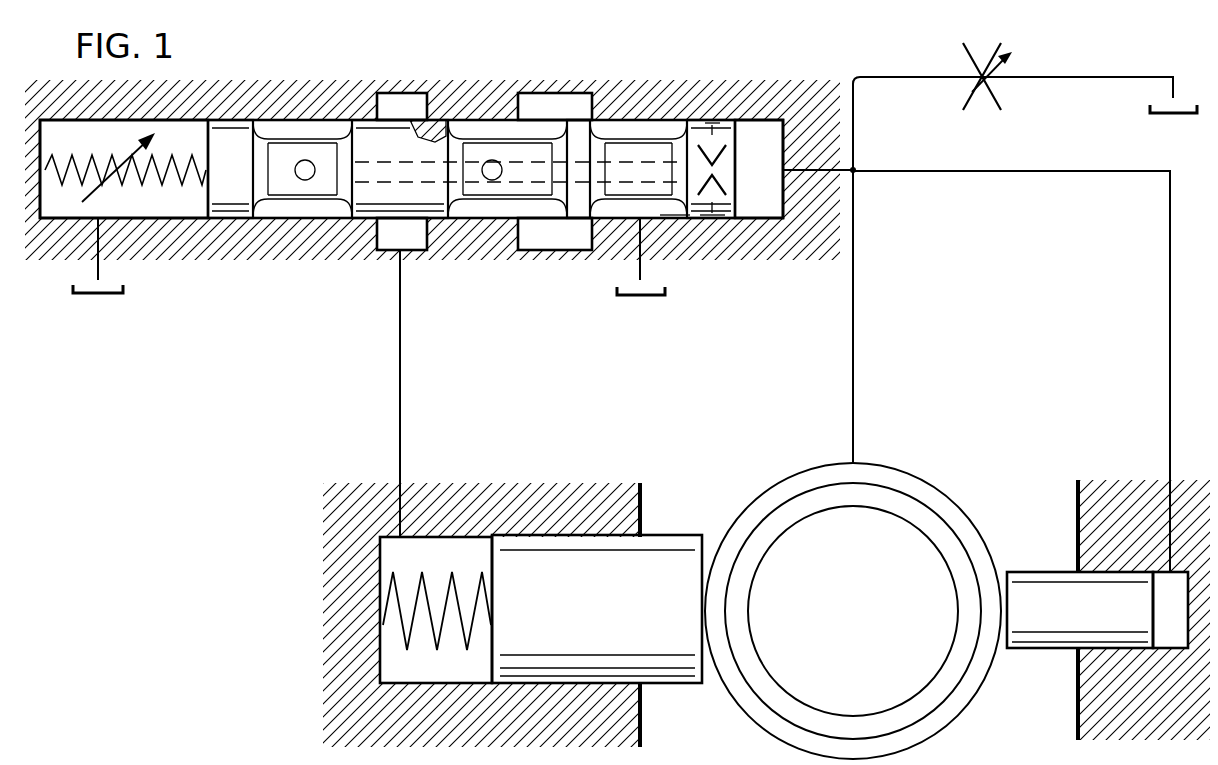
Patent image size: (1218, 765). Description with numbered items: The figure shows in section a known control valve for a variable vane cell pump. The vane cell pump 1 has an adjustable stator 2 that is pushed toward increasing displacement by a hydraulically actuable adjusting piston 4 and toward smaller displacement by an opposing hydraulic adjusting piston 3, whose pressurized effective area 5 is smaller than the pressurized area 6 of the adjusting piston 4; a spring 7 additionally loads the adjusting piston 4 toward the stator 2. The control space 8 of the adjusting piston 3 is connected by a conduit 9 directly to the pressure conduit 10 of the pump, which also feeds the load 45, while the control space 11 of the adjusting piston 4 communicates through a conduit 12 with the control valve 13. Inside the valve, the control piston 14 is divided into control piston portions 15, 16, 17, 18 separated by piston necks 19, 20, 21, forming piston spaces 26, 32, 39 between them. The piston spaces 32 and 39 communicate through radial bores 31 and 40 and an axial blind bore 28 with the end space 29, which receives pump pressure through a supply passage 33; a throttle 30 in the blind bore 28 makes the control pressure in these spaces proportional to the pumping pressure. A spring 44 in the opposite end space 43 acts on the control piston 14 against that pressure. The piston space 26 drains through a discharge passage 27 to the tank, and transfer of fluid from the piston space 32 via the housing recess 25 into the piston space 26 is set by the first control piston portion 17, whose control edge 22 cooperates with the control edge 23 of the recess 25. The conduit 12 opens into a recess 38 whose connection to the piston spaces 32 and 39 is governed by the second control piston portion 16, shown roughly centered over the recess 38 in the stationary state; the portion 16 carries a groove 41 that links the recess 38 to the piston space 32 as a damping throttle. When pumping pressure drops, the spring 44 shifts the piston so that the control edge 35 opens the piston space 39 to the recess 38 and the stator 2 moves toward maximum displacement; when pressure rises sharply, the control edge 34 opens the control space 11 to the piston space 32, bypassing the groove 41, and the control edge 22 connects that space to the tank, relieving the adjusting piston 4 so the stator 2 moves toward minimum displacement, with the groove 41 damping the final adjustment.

The vane cell pump 1 is at (735, 707).
The adjustable stator 2 is at (982, 677).
The adjusting piston 3 is at (1103, 607).
The adjusting piston 4 is at (654, 593).
The effective area 5 is at (1158, 622).
The area 6 is at (490, 660).
The spring 7 is at (400, 643).
The control space 8 is at (1180, 642).
The conduit 9 is at (1170, 335).
The pressure conduit 10 is at (855, 312).
The control space 11 is at (417, 670).
The conduit 12 is at (400, 412).
The control valve 13 is at (275, 104).
The control piston 14 is at (216, 225).
The control piston portion 15 is at (218, 163).
The second control piston portion 16 is at (384, 157).
The first control piston portion 17 is at (645, 147).
The control piston portion 18 is at (715, 123).
The piston neck 19 is at (272, 220).
The piston neck 20 is at (541, 214).
The piston neck 21 is at (666, 123).
The control edge 22 is at (583, 228).
The control edge 23 is at (597, 122).
The housing recess 25 is at (562, 106).
The piston space 26 is at (666, 220).
The discharge passage 27 is at (643, 262).
The axial blind bore 28 is at (730, 170).
The end space 29 is at (746, 161).
The throttle 30 is at (713, 216).
The radial bore 31 is at (493, 181).
The piston space 32 is at (488, 123).
The supply passage 33 is at (827, 173).
The control edge 34 is at (448, 220).
The control edge 35 is at (348, 220).
The recess 38 is at (400, 96).
The piston space 39 is at (318, 123).
The radial bore 40 is at (304, 181).
The groove 41 is at (432, 126).
The end space 43 is at (144, 208).
The spring 44 is at (198, 157).
The load 45 is at (1002, 86).